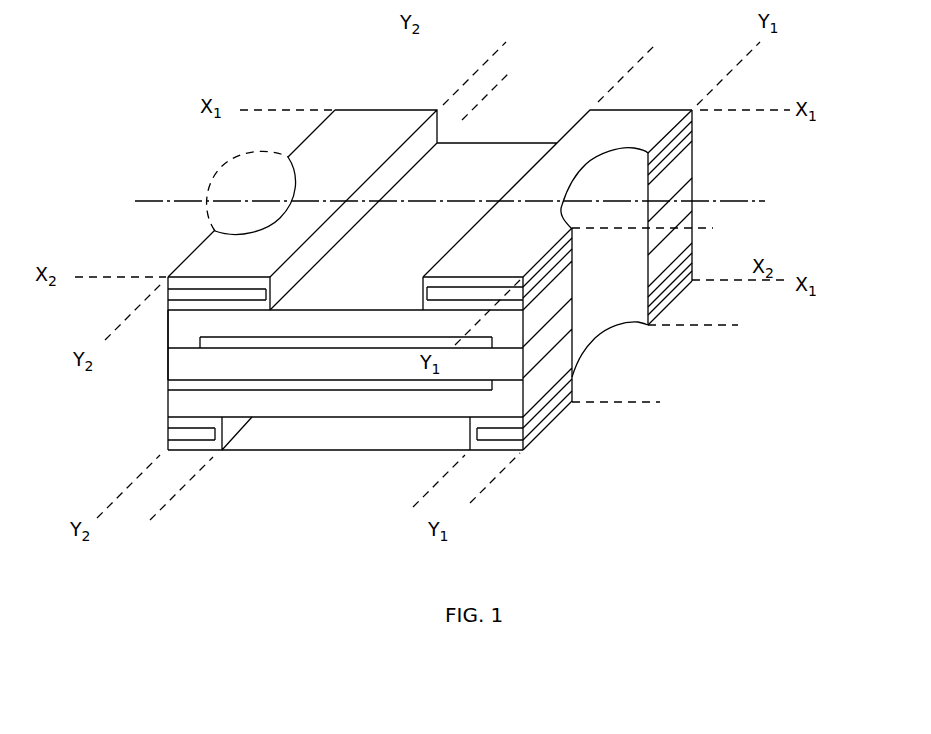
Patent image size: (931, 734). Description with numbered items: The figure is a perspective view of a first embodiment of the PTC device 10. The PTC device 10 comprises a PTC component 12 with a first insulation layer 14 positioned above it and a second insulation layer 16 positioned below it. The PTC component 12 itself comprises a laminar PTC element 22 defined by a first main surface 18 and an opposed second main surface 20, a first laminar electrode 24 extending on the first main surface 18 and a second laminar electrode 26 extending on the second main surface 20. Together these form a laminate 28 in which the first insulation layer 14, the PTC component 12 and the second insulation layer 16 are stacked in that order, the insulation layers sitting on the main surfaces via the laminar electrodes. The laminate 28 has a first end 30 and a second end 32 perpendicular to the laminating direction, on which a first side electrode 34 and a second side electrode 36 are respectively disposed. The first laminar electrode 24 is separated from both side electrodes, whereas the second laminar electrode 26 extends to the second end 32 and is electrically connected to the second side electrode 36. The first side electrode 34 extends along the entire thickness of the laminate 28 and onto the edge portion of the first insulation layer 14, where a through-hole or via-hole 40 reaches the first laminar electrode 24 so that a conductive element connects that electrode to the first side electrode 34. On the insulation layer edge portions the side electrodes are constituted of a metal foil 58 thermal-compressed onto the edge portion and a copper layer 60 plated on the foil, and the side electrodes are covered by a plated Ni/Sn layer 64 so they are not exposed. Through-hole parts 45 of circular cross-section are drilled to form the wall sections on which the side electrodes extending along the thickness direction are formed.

The PTC device 10 is at (547, 91).
The PTC component 12 is at (302, 368).
The first insulation layer 14 is at (323, 320).
The second insulation layer 16 is at (340, 400).
The first main surface 18 is at (230, 347).
The second main surface 20 is at (208, 378).
The laminar PTC element 22 is at (177, 363).
The first laminar electrode 24 is at (357, 342).
The second laminar electrode 26 is at (388, 387).
The laminate 28 is at (526, 410).
The first end 30 is at (695, 162).
The second end 32 is at (167, 325).
The first side electrode 34 is at (612, 321).
The second side electrode 36 is at (210, 220).
The through-hole (via-hole) 40 is at (538, 207).
The through-hole part 45 is at (248, 185).
The metal foil 58 is at (693, 136).
The copper layer 60 is at (692, 127).
The Ni/Sn layer 64 is at (367, 132).